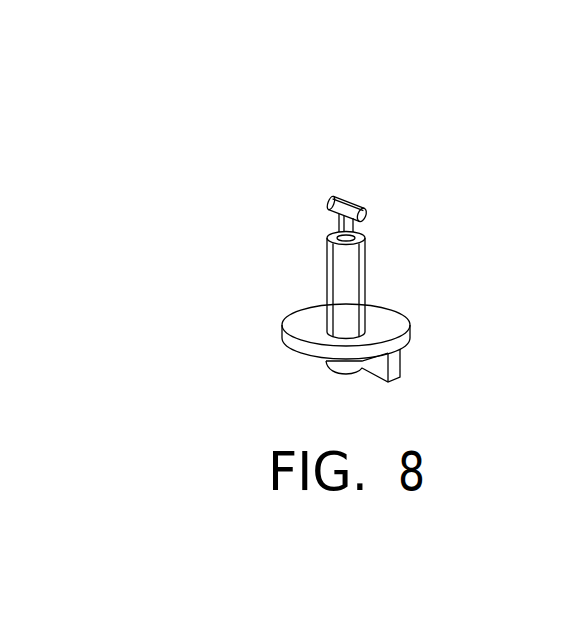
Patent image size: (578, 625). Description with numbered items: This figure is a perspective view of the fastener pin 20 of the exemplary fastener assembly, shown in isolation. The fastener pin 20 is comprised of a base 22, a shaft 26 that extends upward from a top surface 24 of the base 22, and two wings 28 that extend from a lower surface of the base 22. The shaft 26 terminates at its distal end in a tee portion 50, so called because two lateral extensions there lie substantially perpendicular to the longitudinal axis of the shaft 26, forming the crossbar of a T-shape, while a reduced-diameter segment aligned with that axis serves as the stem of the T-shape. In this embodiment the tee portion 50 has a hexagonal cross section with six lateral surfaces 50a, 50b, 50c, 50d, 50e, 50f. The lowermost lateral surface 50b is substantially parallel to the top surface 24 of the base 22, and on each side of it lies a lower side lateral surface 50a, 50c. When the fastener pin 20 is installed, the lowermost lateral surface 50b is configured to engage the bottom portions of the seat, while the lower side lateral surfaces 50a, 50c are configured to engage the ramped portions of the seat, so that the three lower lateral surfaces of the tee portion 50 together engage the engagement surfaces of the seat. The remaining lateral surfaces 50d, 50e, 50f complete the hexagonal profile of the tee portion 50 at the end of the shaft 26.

The fastener pin 20 is at (222, 186).
The base 22 is at (282, 331).
The top surface 24 is at (395, 327).
The shaft 26 is at (327, 282).
The wings 28 is at (388, 383).
The tee portion 50 is at (355, 205).
The lower side lateral surface 50a is at (338, 226).
The lowermost lateral surface 50b is at (363, 229).
The lower side lateral surface 50c is at (366, 216).
The lateral surface 50d is at (369, 209).
The lateral surface 50e is at (338, 201).
The lateral surface 50f is at (327, 207).